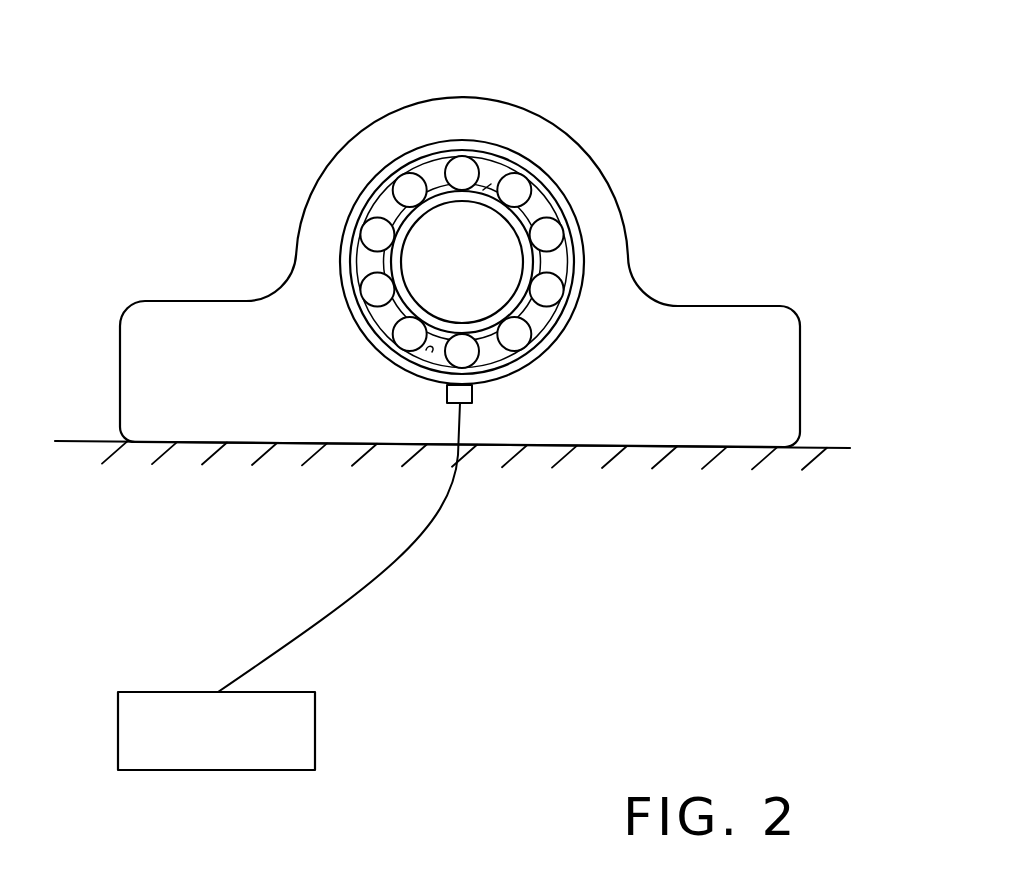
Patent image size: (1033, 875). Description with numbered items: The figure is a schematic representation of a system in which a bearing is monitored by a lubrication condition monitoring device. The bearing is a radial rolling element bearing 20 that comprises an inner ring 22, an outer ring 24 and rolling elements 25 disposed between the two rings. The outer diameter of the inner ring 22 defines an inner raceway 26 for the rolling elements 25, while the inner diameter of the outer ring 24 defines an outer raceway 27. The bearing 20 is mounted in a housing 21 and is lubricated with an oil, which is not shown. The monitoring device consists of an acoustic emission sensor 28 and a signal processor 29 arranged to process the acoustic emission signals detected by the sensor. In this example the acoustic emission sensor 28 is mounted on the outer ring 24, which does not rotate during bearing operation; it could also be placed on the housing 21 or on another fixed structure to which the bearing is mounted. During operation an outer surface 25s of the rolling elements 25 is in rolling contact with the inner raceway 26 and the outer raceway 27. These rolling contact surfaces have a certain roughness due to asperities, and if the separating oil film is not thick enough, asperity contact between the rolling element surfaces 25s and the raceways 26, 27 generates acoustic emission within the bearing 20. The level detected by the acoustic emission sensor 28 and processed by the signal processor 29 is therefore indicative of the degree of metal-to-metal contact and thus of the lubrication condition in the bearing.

The radial rolling element bearing 20 is at (464, 283).
The housing 21 is at (642, 342).
The inner ring 22 is at (408, 223).
The outer ring 24 is at (577, 260).
The rolling elements 25 is at (370, 290).
The outer surface of the rolling elements 25s is at (377, 270).
The inner raceway 26 is at (487, 187).
The outer raceway 27 is at (432, 352).
The acoustic emission sensor 28 is at (472, 391).
The signal processor 29 is at (315, 735).